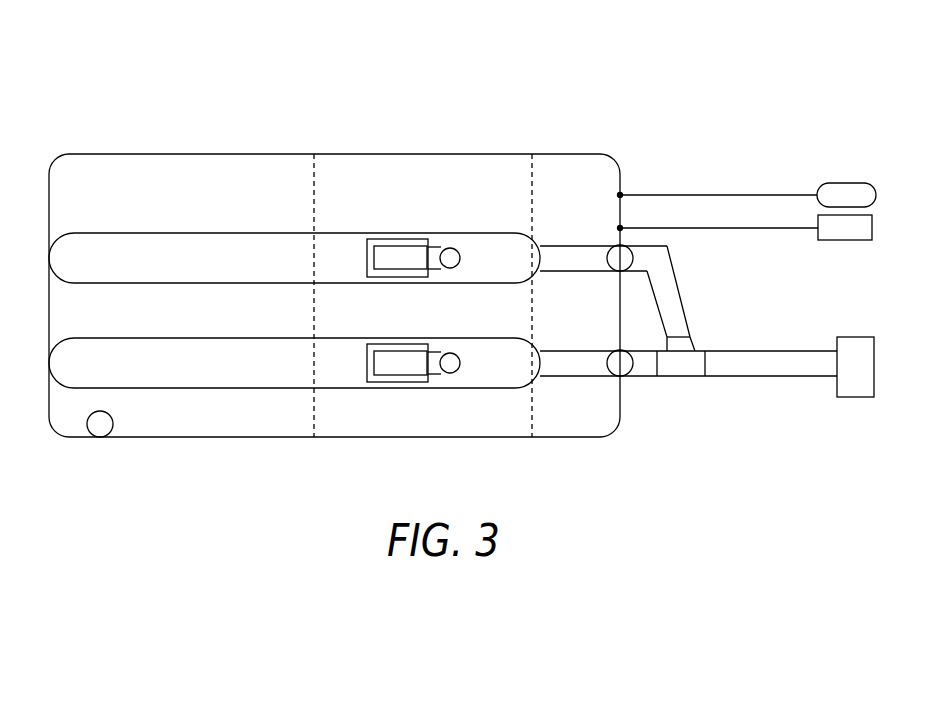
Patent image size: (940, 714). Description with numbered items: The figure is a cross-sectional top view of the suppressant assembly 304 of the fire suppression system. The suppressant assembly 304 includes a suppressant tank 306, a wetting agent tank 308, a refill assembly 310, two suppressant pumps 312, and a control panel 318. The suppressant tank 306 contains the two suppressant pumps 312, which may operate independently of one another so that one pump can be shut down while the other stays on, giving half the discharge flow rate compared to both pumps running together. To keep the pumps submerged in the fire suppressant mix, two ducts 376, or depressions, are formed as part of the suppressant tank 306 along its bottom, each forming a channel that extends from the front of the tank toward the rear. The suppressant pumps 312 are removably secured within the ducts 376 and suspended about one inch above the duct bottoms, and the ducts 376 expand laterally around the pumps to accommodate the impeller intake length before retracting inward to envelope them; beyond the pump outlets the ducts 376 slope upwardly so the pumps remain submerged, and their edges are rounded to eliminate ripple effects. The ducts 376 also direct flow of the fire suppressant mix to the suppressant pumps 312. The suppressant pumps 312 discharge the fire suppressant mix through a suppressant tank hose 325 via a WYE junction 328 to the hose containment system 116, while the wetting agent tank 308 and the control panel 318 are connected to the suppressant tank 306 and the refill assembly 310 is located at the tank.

The suppressant assembly 304 is at (650, 98).
The suppressant tank 306 is at (112, 153).
The duct 376 is at (162, 233).
The suppressant pump 312 is at (422, 240).
The WYE junction 328 is at (313, 413).
The suppressant tank hose 325 is at (733, 376).
The refill assembly 310 is at (98, 425).
The wetting agent tank 308 is at (856, 182).
The control panel 318 is at (838, 240).
The hose containment system 116 is at (847, 397).